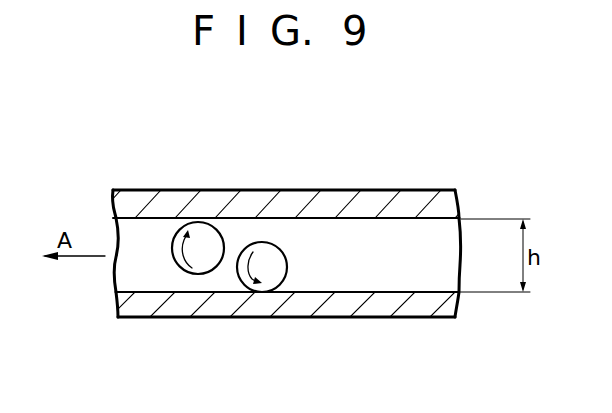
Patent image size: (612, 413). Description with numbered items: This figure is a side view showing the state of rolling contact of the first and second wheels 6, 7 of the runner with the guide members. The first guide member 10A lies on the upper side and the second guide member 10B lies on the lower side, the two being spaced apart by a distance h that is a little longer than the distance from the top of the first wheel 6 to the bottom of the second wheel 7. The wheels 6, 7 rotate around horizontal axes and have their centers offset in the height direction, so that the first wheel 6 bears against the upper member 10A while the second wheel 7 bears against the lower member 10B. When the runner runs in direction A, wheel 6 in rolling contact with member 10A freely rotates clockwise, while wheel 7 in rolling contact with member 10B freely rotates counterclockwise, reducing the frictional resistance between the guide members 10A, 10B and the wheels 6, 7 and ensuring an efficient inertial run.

The first wheel 6 is at (203, 232).
The second wheel 7 is at (269, 283).
The first guide member 10A is at (383, 203).
The second guide member 10B is at (385, 309).